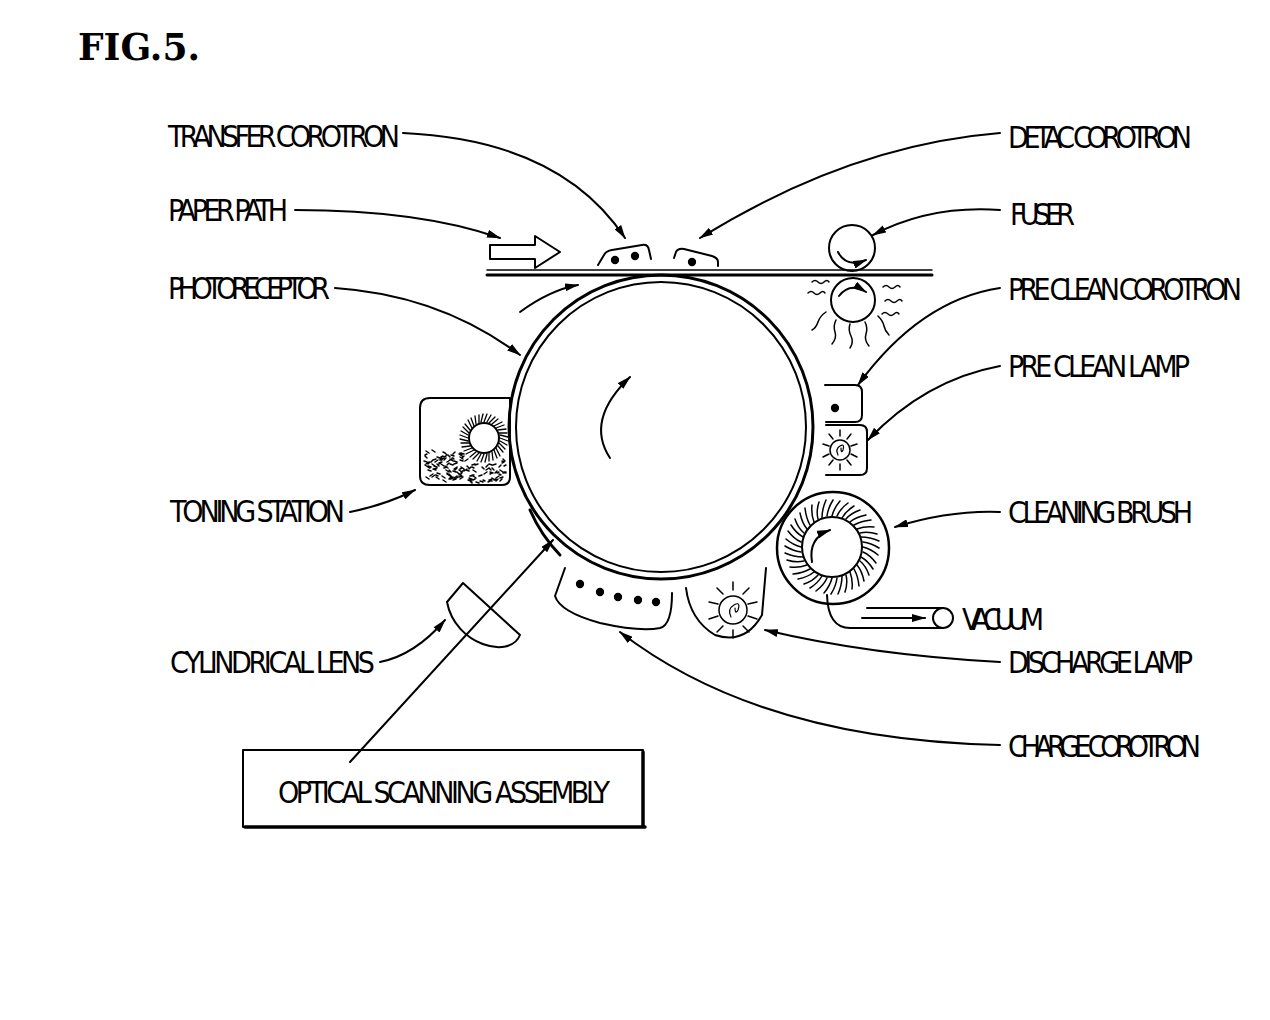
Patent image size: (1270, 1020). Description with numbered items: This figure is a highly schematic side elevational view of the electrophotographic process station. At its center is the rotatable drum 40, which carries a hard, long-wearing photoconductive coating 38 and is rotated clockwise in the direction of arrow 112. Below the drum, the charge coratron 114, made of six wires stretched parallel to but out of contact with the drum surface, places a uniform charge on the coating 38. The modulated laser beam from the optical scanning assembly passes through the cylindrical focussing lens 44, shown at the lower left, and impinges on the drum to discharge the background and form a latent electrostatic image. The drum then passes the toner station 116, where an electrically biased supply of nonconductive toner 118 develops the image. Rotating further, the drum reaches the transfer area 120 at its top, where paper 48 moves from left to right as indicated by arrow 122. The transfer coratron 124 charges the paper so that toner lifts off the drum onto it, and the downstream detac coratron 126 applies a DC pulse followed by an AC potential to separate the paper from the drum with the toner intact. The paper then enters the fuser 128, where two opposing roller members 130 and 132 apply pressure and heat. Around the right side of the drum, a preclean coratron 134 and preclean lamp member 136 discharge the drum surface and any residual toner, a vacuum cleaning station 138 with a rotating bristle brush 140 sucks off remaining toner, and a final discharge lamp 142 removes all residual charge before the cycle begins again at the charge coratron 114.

The rotatable drum 40 is at (669, 338).
The arrow indicating drum rotation direction 112 is at (607, 397).
The photoconductive coating 38 is at (528, 511).
The paper 48 is at (492, 275).
The transfer area 120 is at (532, 308).
The arrow indicating paper movement 122 is at (528, 244).
The transfer coratron 124 is at (610, 252).
The detac coratron 126 is at (719, 257).
The fuser 128 is at (858, 262).
The fuser roller member 130 is at (838, 227).
The fuser roller member 132 is at (831, 292).
The preclean coratron 134 is at (865, 405).
The preclean lamp member 136 is at (866, 470).
The vacuum cleaning station 138 is at (867, 560).
The rotating bristle brush 140 is at (868, 565).
The final discharge lamp 142 is at (742, 646).
The charge coratron 114 is at (608, 625).
The toner station 116 is at (426, 419).
The toner 118 is at (440, 470).
The cylindrical focussing lens 44 is at (460, 589).